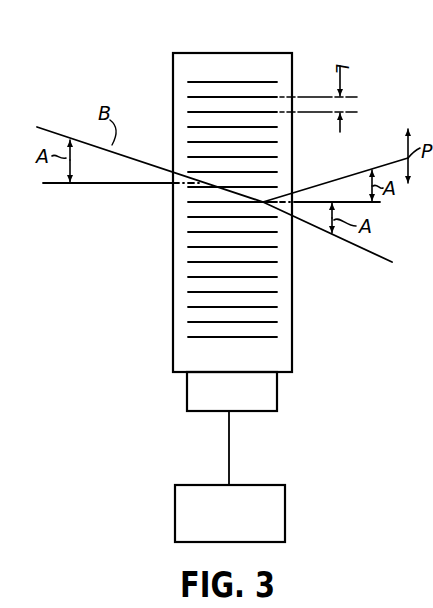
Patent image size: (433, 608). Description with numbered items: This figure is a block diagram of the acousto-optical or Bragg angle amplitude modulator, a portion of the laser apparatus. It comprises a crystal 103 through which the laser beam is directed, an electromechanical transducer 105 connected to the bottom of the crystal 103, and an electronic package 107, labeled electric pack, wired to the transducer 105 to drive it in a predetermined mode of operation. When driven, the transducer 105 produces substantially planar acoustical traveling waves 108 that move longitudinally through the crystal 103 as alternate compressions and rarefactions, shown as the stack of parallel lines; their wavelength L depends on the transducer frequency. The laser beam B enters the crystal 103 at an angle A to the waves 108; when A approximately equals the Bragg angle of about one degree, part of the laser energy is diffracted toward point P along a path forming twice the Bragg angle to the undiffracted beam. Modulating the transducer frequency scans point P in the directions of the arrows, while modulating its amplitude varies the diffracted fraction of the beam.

The crystal 103 is at (245, 53).
The electromechanical transducer 105 is at (187, 392).
The electronic package 107 is at (175, 492).
The acoustical traveling waves 108 is at (210, 97).